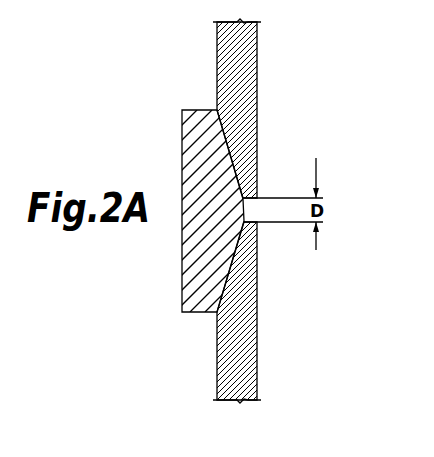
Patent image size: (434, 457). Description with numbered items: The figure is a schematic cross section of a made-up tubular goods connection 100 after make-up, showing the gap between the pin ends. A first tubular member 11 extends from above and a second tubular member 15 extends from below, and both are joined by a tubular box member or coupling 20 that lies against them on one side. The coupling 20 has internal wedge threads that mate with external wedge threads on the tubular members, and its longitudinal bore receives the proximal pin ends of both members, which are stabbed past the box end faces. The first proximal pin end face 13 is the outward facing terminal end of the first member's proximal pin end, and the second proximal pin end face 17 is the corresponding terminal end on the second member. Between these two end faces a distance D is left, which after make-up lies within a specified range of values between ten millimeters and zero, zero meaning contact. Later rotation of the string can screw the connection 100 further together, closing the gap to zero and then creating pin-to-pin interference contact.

The made-up tubular goods connection 100 is at (270, 116).
The first tubular member 11 is at (217, 60).
The second tubular member 15 is at (222, 369).
The tubular box member 20 is at (182, 160).
The first proximal pin end face 13 is at (259, 197).
The second proximal pin end face 17 is at (259, 224).